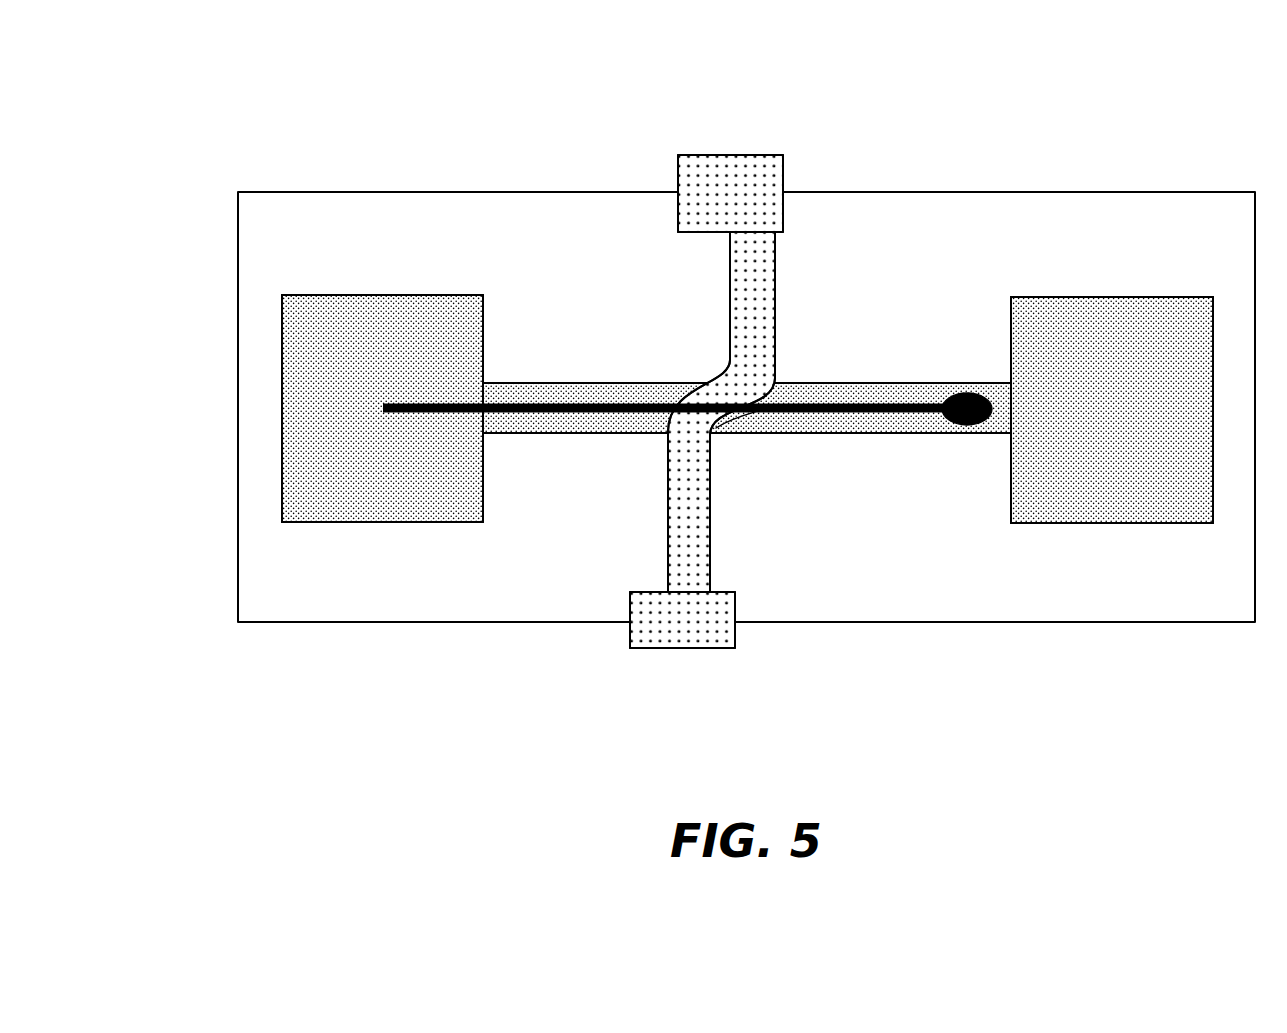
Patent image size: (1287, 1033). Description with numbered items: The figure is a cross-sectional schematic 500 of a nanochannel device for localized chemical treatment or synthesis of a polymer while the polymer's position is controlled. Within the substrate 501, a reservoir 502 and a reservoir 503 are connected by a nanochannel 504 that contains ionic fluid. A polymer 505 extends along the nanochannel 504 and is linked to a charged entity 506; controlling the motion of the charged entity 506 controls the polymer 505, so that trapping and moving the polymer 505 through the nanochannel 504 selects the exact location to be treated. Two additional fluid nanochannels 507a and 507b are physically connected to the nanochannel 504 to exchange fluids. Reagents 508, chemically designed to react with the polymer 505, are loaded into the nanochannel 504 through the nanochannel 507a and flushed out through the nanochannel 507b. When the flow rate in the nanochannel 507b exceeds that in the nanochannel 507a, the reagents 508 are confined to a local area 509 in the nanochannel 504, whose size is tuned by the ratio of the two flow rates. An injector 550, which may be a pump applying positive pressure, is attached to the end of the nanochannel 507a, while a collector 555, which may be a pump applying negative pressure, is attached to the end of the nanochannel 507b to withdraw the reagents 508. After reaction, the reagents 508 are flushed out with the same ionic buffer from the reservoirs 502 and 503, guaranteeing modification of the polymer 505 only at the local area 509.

The cross-sectional schematic 500 is at (1016, 108).
The substrate 501 is at (253, 205).
The reservoir 502 is at (383, 302).
The reservoir 503 is at (1117, 305).
The nanochannel 504 is at (487, 373).
The polymer 505 is at (532, 434).
The charged entity 506 is at (970, 428).
The fluid nanochannel 507a is at (782, 238).
The fluid nanochannel 507b is at (657, 438).
The reagents 508 is at (748, 316).
The local area 509 is at (716, 430).
The injector 550 is at (690, 168).
The collector 555 is at (728, 605).